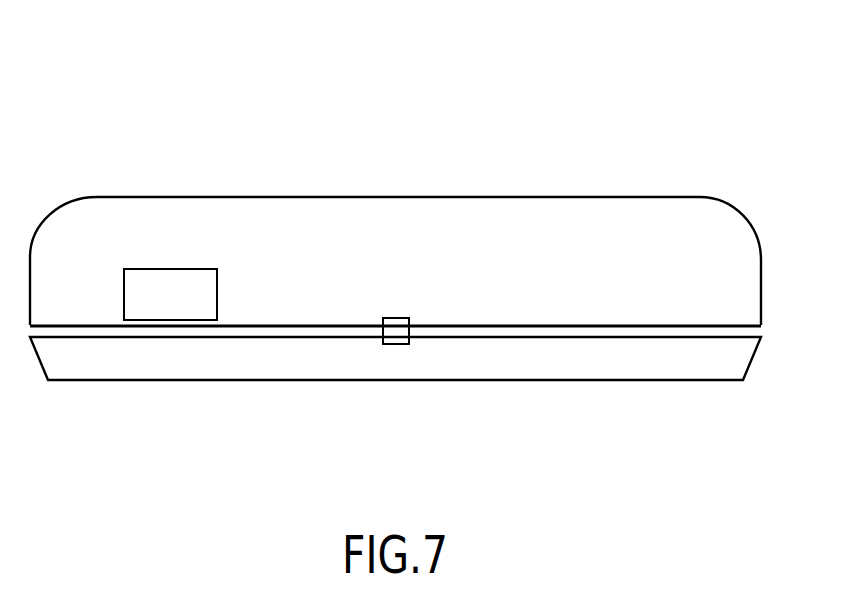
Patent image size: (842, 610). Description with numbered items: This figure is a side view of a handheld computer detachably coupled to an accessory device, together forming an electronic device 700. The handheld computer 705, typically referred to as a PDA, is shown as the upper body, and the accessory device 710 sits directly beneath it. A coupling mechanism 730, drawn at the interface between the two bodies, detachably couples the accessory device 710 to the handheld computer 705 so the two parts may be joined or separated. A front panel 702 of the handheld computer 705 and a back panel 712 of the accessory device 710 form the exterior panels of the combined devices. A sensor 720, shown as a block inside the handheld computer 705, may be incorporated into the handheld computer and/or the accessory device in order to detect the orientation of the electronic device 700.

The electronic device 700 is at (703, 57).
The front panel 702 is at (280, 197).
The handheld computer 705 is at (395, 229).
The accessory device 710 is at (395, 388).
The back panel 712 is at (482, 381).
The sensor 720 is at (172, 269).
The coupling mechanism 730 is at (395, 318).